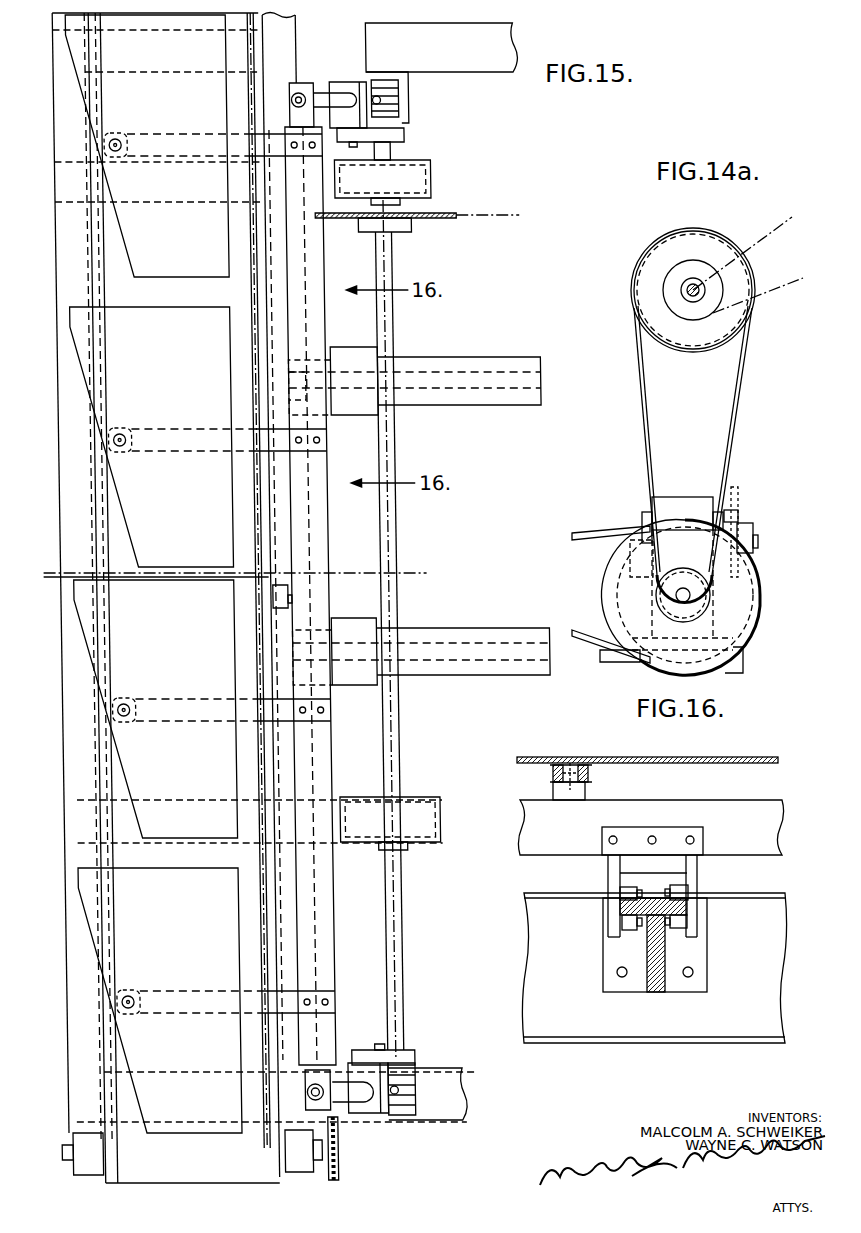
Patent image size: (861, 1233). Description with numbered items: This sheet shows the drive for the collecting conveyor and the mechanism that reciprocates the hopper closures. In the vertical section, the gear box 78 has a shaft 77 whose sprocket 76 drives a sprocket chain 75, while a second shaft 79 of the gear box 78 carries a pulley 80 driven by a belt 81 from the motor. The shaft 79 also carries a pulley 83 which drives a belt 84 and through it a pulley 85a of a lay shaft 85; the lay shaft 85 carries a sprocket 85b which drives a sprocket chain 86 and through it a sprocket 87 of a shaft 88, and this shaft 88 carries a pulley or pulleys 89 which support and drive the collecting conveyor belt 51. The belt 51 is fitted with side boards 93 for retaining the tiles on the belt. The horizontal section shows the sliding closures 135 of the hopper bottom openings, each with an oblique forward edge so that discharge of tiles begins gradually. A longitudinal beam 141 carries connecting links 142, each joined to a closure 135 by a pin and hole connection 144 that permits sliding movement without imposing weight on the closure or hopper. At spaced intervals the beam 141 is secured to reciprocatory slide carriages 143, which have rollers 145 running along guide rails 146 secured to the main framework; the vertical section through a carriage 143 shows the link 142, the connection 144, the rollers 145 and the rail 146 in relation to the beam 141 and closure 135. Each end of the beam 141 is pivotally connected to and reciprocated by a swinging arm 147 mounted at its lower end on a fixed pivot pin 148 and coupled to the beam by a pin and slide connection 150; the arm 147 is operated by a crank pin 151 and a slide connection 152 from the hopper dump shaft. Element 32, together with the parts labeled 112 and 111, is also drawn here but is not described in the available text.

In FIG. 15, the pin and slide connection 150 is at (290, 86).
In FIG. 15, the swinging arm 147 is at (322, 95).
In FIG. 15, the slide connection 152 is at (344, 84).
In FIG. 15, the fixed pivot pin 148 is at (383, 80).
In FIG. 15, the crank pin 151 is at (352, 149).
In FIG. 15, the plate 112 is at (432, 213).
In FIG. 15, the axis line 111 is at (490, 215).
In FIG. 15, the longitudinal beam 141 is at (312, 279).
In FIG. 16, the longitudinal beam 141 is at (736, 806).
In FIG. 15, the slide carriage 143 is at (343, 350).
In FIG. 16, the slide carriage 143 is at (610, 867).
In FIG. 15, the guide rail 146 is at (450, 360).
In FIG. 16, the guide rail 146 is at (660, 912).
In FIG. 15, the pin and hole connection 144 is at (117, 134).
In FIG. 16, the pin and hole connection 144 is at (548, 777).
In FIG. 15, the connecting link 142 is at (181, 133).
In FIG. 16, the connecting link 142 is at (592, 800).
In FIG. 15, the sliding closure 135 is at (183, 236).
In FIG. 16, the sliding closure 135 is at (760, 757).
In FIG. 15, the collecting conveyor belt 51 is at (102, 520).
In FIG. 15, the side board 93 is at (100, 827).
In FIG. 15, the stop block 32 is at (283, 599).
In FIG. 15, the shaft 88 is at (268, 1150).
In FIG. 15, the pulley 89 is at (88, 1178).
In FIG. 15, the sprocket 87 is at (322, 1178).
In FIG. 14A, the sprocket chain 86 is at (738, 242).
In FIG. 14A, the sprocket 85b is at (714, 267).
In FIG. 14A, the lay shaft 85 is at (686, 292).
In FIG. 14A, the pulley 85a is at (695, 344).
In FIG. 14A, the belt 84 is at (745, 435).
In FIG. 14A, the gear box 78 is at (685, 497).
In FIG. 14A, the belt 81 is at (600, 532).
In FIG. 14A, the sprocket chain 75 is at (737, 503).
In FIG. 14A, the sprocket 76 is at (738, 521).
In FIG. 14A, the shaft 77 is at (758, 545).
In FIG. 14A, the pulley 80 is at (614, 590).
In FIG. 14A, the pulley 83 is at (683, 568).
In FIG. 14A, the shaft 79 is at (676, 596).
In FIG. 16, the roller 145 is at (628, 893).